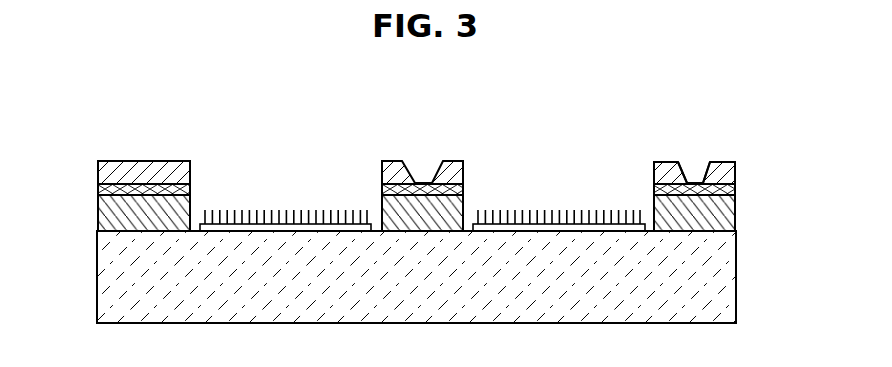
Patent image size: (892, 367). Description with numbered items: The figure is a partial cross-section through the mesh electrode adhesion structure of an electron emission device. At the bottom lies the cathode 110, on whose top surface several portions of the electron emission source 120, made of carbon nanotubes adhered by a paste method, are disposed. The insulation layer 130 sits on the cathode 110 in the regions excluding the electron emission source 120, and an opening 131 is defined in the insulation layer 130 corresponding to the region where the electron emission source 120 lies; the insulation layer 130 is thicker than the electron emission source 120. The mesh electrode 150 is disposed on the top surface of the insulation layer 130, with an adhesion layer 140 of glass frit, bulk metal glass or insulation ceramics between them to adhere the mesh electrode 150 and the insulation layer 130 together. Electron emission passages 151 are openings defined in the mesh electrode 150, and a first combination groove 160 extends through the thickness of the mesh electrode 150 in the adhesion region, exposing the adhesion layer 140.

The cathode 110 is at (730, 278).
The electron emission source 120 is at (541, 210).
The insulation layer 130 is at (98, 214).
The opening 131 is at (653, 210).
The adhesion layer 140 is at (98, 190).
The mesh electrode 150 is at (98, 166).
The electron emission passage 151 is at (653, 172).
The first combination groove 160 is at (703, 172).